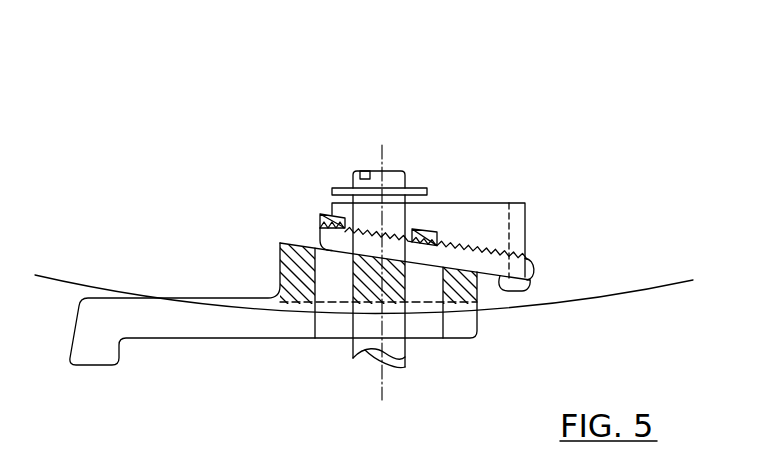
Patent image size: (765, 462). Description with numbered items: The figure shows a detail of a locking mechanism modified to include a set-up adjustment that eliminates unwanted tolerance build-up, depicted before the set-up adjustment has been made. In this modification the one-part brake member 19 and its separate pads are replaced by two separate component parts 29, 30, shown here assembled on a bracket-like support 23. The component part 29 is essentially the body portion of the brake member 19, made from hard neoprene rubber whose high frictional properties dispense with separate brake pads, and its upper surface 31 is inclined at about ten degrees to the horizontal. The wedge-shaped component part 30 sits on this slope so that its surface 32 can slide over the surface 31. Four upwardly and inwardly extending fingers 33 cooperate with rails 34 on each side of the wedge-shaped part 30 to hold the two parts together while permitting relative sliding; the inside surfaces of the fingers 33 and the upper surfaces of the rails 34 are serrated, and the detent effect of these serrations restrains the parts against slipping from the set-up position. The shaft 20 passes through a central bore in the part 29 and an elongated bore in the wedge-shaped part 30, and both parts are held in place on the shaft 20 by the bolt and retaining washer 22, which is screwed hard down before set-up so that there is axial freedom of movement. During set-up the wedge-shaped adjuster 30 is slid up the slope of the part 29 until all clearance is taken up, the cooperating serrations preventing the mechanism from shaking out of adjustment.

The brake member 19 is at (272, 226).
The shaft 20 is at (366, 349).
The bolt and retaining washer 22 is at (408, 168).
The bracket 23 is at (112, 360).
The component part 29 is at (280, 264).
The wedge-shaped component part 30 is at (517, 232).
The upper surface 31 is at (298, 245).
The surface 32 is at (505, 293).
The fingers 33 is at (329, 214).
The rails 34 is at (495, 264).